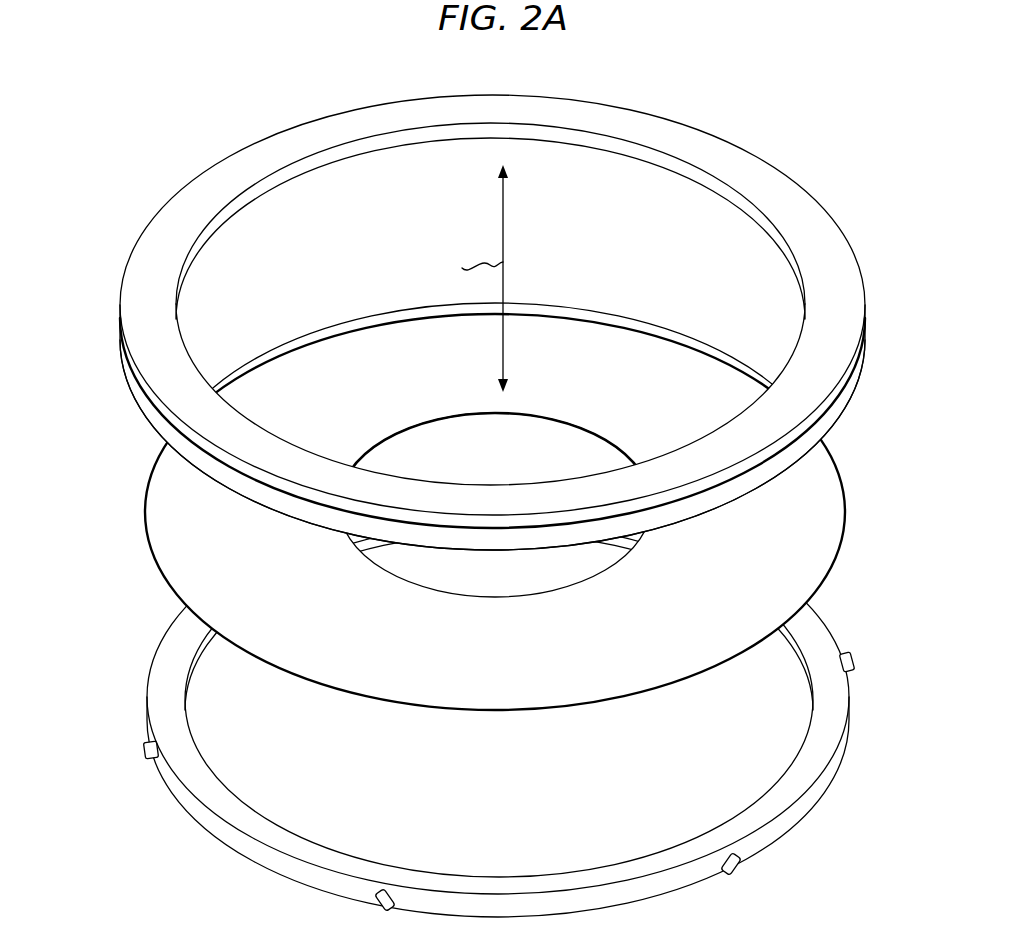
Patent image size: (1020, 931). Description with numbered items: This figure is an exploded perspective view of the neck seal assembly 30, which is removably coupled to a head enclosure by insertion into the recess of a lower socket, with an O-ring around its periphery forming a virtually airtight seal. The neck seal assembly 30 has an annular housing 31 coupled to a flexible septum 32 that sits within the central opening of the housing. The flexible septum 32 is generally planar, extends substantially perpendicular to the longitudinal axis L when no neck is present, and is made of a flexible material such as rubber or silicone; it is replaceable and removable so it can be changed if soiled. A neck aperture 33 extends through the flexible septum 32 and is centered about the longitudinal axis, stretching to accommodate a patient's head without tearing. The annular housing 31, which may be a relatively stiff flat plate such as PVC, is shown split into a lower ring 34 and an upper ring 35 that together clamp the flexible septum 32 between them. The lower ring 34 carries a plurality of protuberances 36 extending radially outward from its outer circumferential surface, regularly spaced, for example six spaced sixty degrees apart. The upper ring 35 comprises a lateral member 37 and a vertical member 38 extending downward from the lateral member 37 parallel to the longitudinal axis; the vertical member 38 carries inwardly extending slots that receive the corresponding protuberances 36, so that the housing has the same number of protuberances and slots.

The neck seal assembly 30 is at (161, 115).
The annular housing 31 is at (152, 210).
The flexible septum 32 is at (146, 492).
The neck aperture 33 is at (415, 571).
The lower ring 34 is at (165, 643).
The upper ring 35 is at (125, 292).
The protuberances 36 is at (143, 749).
The lateral member 37 is at (843, 266).
The vertical member 38 is at (827, 416).